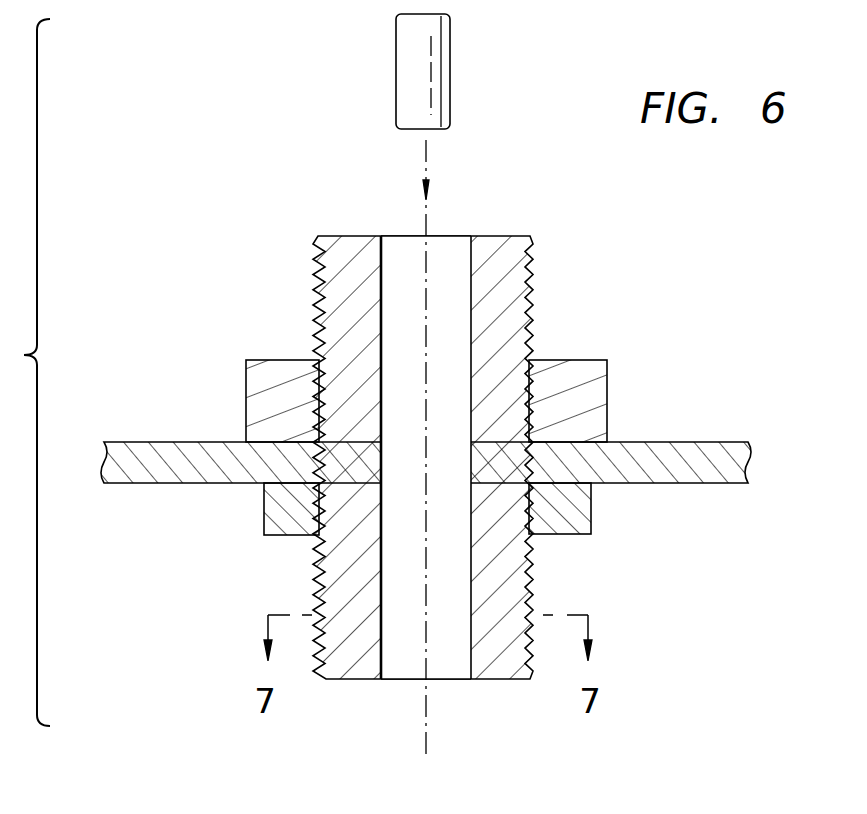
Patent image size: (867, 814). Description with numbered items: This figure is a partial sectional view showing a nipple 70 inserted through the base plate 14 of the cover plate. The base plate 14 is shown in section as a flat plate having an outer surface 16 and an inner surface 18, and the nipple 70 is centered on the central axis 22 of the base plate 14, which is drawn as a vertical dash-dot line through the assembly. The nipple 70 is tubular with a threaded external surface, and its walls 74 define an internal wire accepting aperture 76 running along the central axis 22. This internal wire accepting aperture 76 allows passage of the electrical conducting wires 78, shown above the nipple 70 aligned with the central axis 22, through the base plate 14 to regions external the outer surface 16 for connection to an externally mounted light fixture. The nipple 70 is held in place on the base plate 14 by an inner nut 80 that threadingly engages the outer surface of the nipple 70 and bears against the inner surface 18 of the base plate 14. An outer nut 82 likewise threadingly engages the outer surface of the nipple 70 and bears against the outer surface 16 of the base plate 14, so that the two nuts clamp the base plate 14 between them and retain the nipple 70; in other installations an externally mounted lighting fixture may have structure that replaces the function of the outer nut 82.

The base plate 14 is at (675, 483).
The outer surface 16 is at (610, 476).
The inner surface 18 is at (652, 441).
The central axis 22 is at (427, 721).
The nipple 70 is at (535, 283).
The walls 74 is at (385, 260).
The internal wire accepting aperture 76 is at (448, 258).
The electrical conducting wires 78 is at (450, 72).
The inner nut 80 is at (248, 358).
The outer nut 82 is at (262, 524).